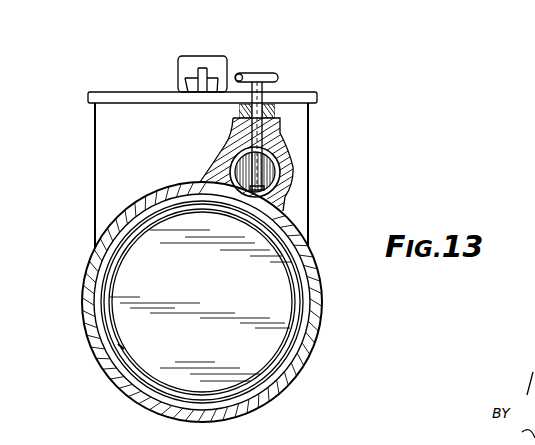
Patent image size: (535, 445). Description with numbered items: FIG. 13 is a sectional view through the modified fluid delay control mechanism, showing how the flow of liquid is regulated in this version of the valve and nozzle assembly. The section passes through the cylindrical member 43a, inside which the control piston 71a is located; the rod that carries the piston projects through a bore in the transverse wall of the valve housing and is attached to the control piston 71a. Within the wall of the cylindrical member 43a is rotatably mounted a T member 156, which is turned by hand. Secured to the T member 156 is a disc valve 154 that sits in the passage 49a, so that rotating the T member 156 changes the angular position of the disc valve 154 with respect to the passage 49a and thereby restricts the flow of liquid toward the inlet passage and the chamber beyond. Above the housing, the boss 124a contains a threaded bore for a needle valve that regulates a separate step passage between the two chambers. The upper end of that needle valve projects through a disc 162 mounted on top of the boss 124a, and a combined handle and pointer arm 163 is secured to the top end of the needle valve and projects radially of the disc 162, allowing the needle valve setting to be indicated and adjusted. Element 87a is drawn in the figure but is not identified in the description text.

The boss 124a is at (298, 117).
The disc 162 is at (119, 93).
The combined handle and pointer arm 163 is at (194, 56).
The T member 156 is at (268, 73).
The disc valve 154 is at (238, 160).
The passage 49a is at (280, 169).
The cylindrical member 43a is at (314, 323).
The gasket ring 87a is at (170, 390).
The control piston 71a is at (226, 279).